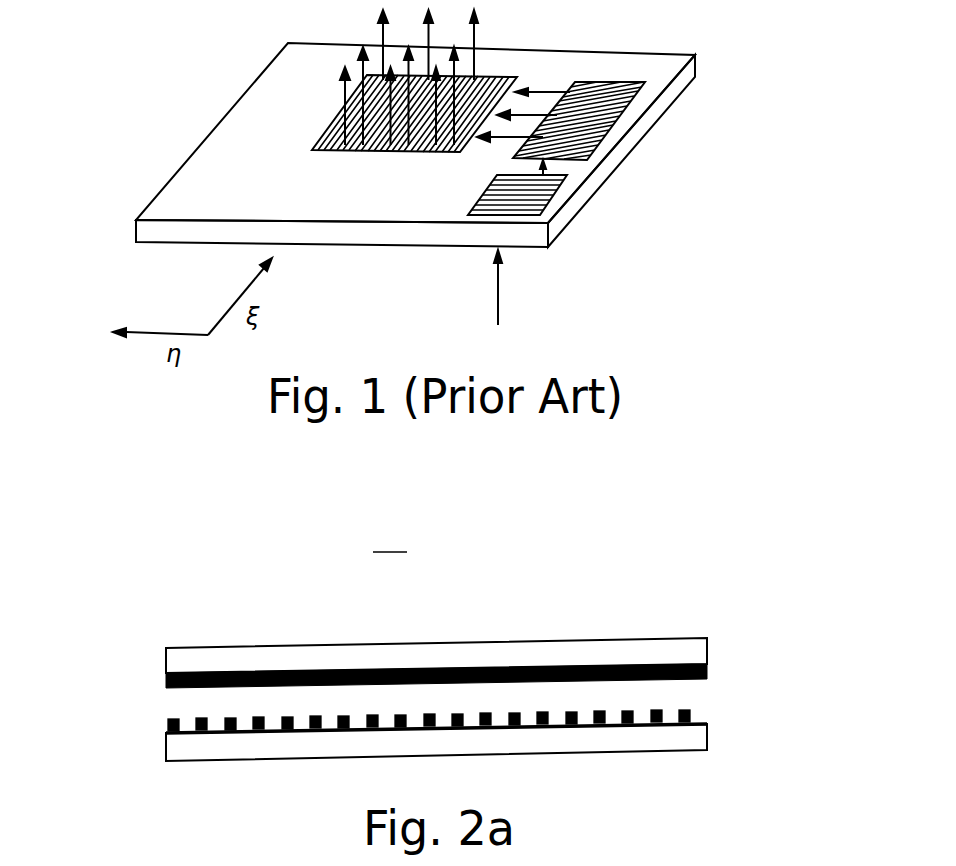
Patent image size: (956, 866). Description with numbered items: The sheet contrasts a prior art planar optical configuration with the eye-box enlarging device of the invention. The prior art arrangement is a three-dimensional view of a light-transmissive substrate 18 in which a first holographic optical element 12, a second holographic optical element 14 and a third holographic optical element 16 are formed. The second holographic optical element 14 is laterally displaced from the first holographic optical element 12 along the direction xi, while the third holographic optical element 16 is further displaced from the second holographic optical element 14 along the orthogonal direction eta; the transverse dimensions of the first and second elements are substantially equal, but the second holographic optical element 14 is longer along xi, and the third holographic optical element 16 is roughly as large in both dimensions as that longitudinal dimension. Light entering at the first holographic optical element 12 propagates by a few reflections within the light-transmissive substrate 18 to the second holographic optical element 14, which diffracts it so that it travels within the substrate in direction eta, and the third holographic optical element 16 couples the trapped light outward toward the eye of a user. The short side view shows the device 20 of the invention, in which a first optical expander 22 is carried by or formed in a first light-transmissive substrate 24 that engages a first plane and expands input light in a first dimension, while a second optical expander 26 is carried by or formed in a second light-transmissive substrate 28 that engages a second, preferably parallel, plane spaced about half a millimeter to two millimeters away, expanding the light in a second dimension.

In FIG. 1, the first holographic optical element 12 is at (543, 206).
In FIG. 1, the second holographic optical element 14 is at (610, 135).
In FIG. 1, the third holographic optical element 16 is at (312, 150).
In FIG. 1, the light-transmissive substrate 18 is at (247, 90).
In FIG. 2A, the device 20 is at (390, 540).
In FIG. 2A, the first optical expander 22 is at (167, 725).
In FIG. 2A, the first light-transmissive substrate 24 is at (187, 750).
In FIG. 2A, the second optical expander 26 is at (166, 681).
In FIG. 2A, the second light-transmissive substrate 28 is at (195, 660).